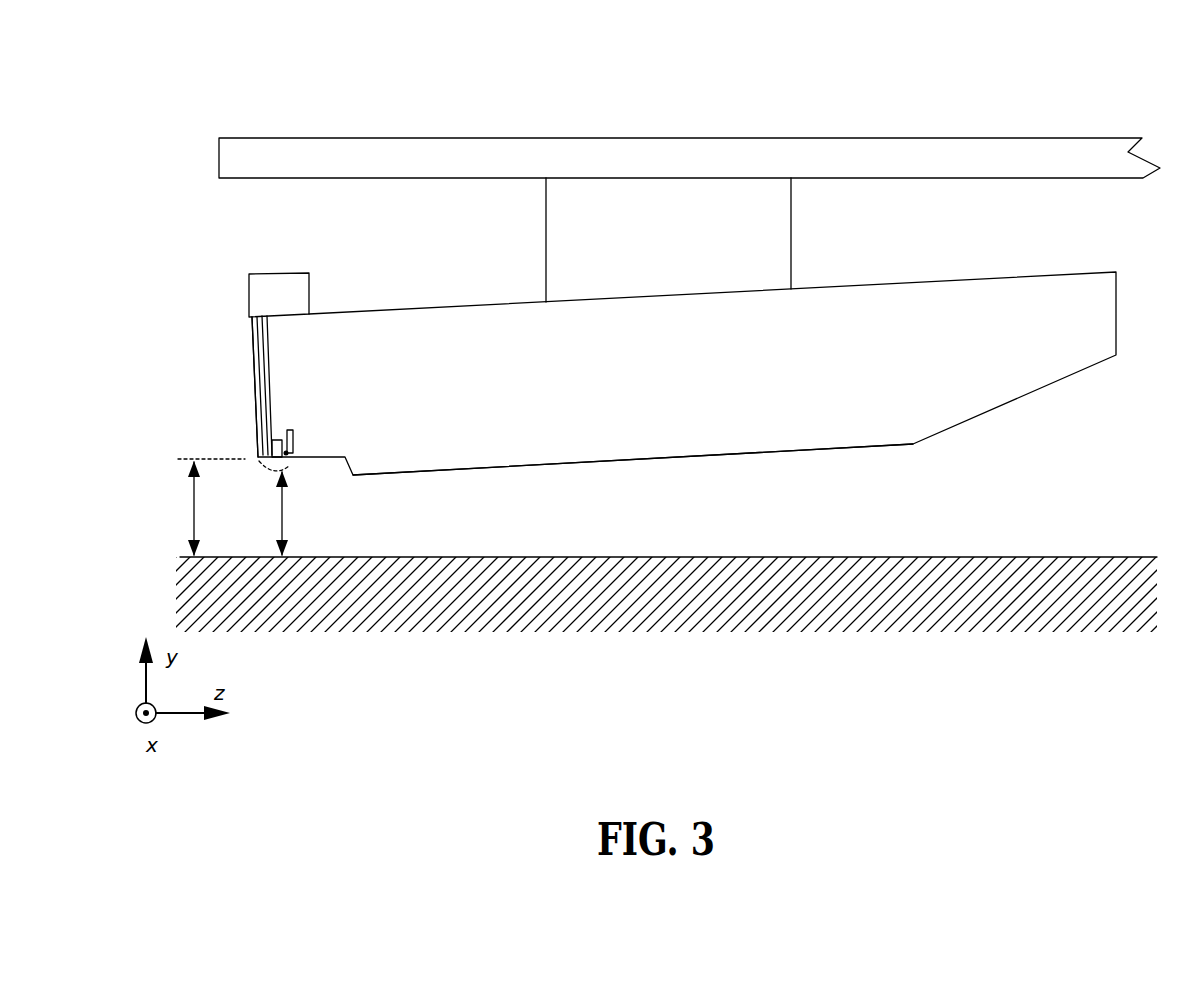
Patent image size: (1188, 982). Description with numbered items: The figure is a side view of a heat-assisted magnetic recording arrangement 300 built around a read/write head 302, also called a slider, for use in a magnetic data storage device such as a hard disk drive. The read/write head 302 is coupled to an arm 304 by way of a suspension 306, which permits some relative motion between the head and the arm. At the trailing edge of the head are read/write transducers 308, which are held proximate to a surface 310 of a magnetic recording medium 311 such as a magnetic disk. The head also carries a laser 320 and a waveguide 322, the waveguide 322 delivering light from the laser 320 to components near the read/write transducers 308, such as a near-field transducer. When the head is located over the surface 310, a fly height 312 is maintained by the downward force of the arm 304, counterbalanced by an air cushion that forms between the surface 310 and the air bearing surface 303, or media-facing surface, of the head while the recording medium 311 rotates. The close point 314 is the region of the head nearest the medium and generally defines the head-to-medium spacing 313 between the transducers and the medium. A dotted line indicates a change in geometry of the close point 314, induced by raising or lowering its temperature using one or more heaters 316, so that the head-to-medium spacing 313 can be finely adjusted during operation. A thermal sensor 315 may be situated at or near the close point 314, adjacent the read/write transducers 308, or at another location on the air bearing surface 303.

The head assembly 300 is at (148, 58).
The read/write head 302 is at (972, 290).
The air bearing surface 303 is at (487, 469).
The arm 304 is at (1043, 148).
The suspension 306 is at (791, 228).
The read/write transducers 308 is at (273, 440).
The surface 310 is at (975, 557).
The magnetic recording medium 311 is at (995, 615).
The fly height 312 is at (190, 513).
The head-to-medium spacing 313 is at (278, 513).
The close point 314 is at (290, 470).
The thermal sensor 315 is at (290, 453).
The heaters 316 is at (288, 430).
The laser 320 is at (278, 286).
The waveguide 322 is at (255, 350).